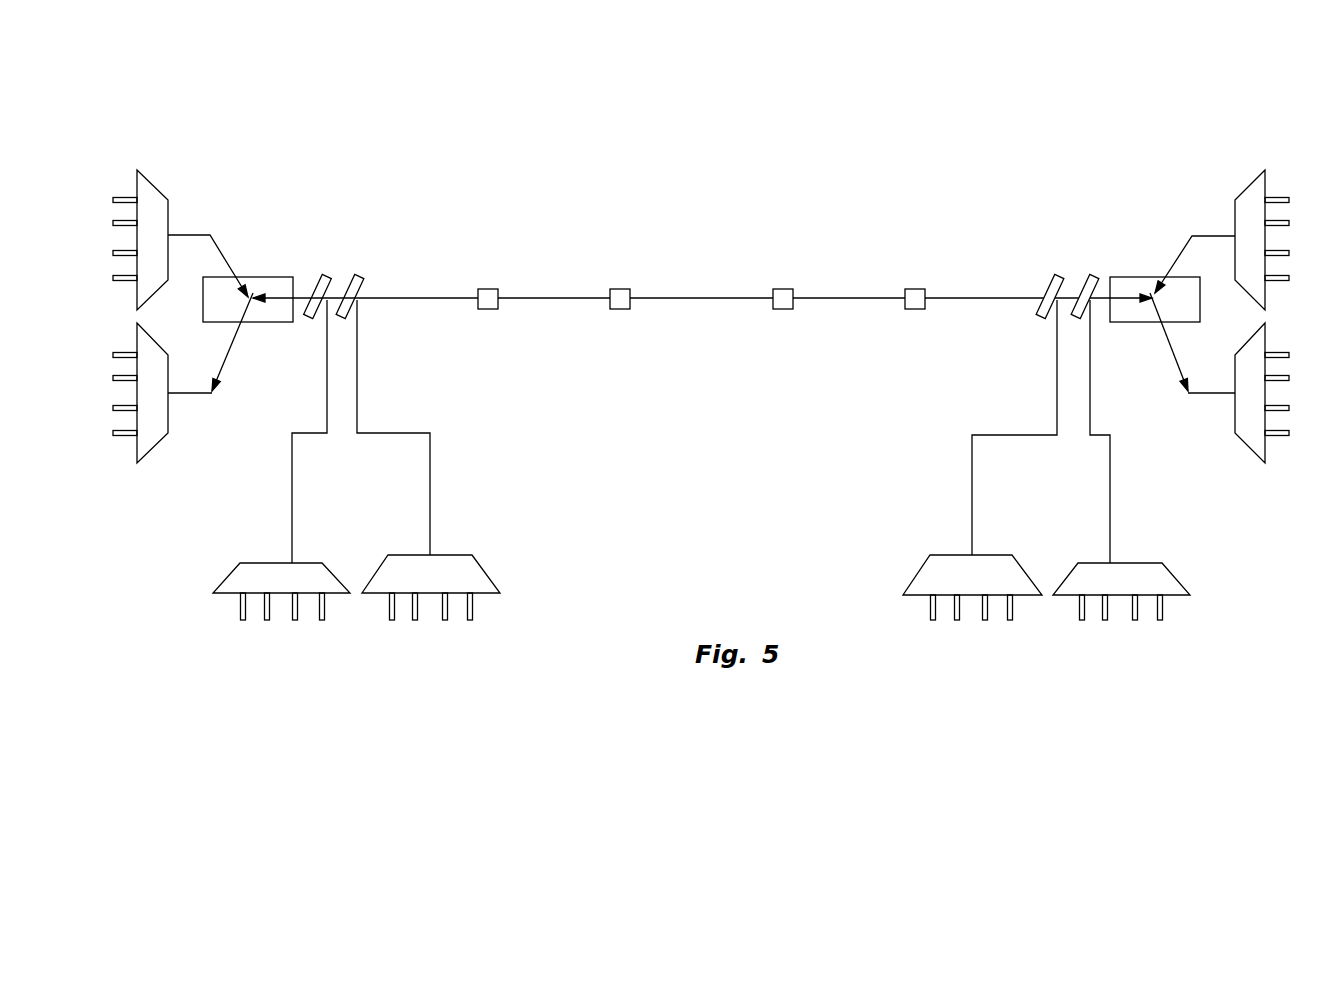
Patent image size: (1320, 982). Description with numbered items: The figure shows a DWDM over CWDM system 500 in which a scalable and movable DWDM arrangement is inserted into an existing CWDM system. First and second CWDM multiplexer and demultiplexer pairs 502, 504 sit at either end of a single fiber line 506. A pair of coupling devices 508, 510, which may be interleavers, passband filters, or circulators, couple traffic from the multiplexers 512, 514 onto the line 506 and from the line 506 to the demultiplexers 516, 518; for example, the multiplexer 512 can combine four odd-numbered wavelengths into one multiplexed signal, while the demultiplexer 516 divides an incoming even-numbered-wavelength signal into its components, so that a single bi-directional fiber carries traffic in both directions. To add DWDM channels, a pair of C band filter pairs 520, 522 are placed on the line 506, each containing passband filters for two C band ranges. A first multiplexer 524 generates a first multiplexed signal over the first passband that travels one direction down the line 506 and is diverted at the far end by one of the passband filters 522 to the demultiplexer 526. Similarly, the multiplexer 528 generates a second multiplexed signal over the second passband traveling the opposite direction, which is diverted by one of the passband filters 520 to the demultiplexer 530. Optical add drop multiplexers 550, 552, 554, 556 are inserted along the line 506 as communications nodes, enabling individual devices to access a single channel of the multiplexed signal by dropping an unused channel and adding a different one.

The DWDM over CWDM system 500 is at (762, 62).
The first CWDM multiplexer and demultiplexer pair 502 is at (282, 125).
The second CWDM multiplexer and demultiplexer pair 504 is at (1174, 125).
The single fiber line 506 is at (715, 297).
The coupling device 508 is at (252, 277).
The coupling device 510 is at (1130, 277).
The multiplexer 512 is at (170, 215).
The multiplexer 514 is at (1235, 202).
The demultiplexer 516 is at (168, 425).
The demultiplexer 518 is at (1235, 425).
The C band filter pair 520 is at (318, 272).
The C band filter pair 522 is at (1097, 272).
The first multiplexer 524 is at (232, 577).
The demultiplexer 526 is at (912, 575).
The multiplexer 528 is at (1173, 573).
The demultiplexer 530 is at (480, 568).
The optical add drop multiplexer 550 is at (488, 310).
The optical add drop multiplexer 552 is at (620, 310).
The optical add drop multiplexer 554 is at (783, 310).
The optical add drop multiplexer 556 is at (915, 310).